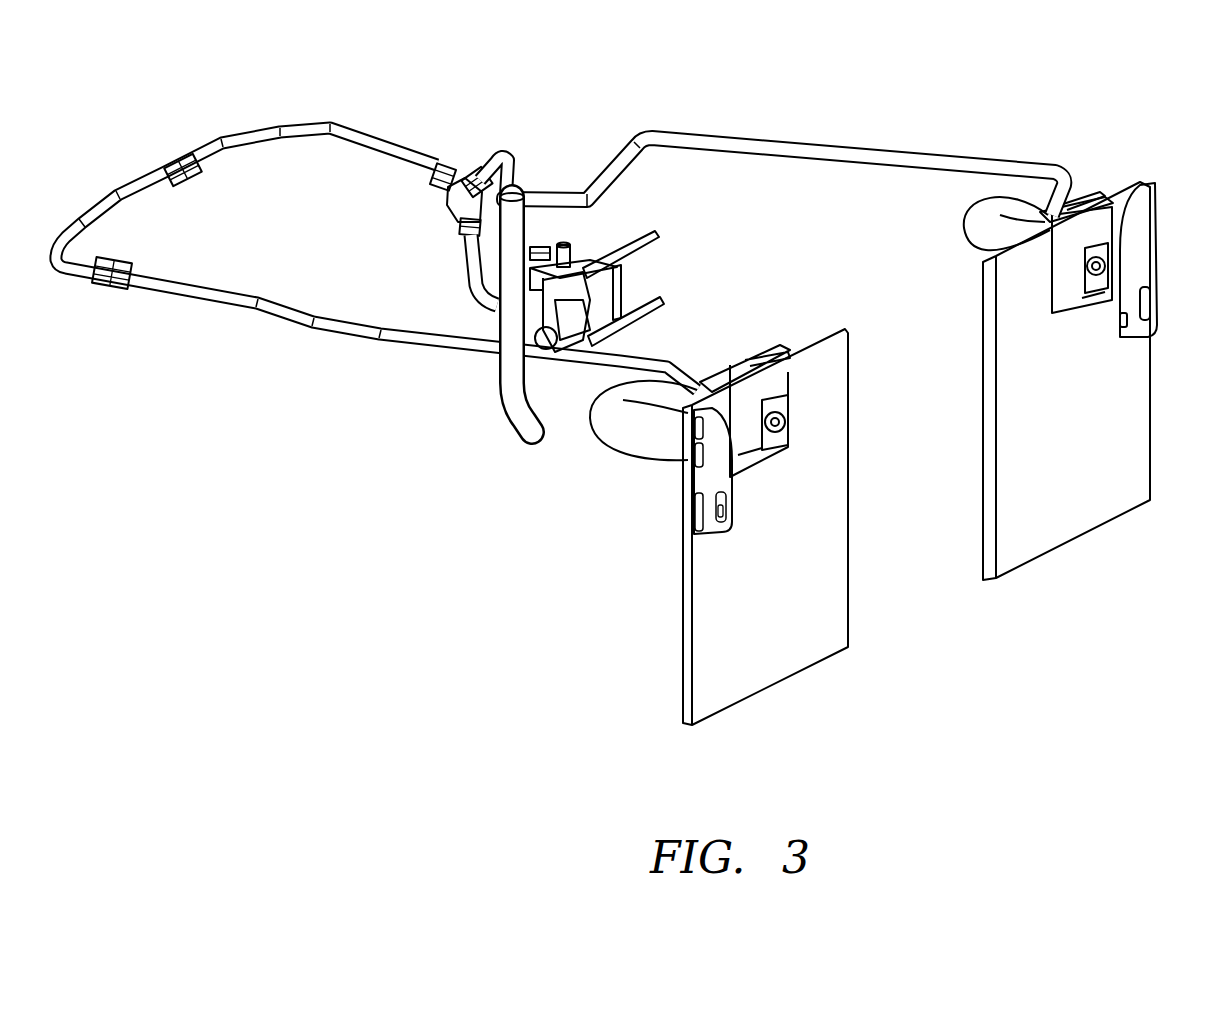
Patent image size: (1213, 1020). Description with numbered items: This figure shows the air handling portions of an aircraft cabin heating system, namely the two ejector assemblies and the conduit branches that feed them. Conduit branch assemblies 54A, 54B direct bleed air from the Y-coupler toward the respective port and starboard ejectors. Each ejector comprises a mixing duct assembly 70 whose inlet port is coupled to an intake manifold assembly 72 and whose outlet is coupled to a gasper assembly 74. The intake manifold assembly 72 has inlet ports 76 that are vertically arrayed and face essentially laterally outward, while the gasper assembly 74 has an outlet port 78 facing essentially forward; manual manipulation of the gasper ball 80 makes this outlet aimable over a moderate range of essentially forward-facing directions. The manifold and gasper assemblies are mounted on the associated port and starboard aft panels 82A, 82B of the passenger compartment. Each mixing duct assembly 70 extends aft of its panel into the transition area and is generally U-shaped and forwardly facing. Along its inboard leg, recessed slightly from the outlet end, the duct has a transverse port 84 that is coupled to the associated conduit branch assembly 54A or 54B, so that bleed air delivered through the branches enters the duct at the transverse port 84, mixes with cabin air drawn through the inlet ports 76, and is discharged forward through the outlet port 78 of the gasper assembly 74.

The conduit branch assembly 54A is at (845, 148).
The conduit branch assembly 54B is at (440, 354).
The mixing duct assembly 70 is at (642, 450).
The intake manifold assembly 72 is at (730, 518).
The gasper assembly 74 is at (770, 456).
The inlet ports 76 is at (693, 533).
The outlet port 78 is at (787, 426).
The gasper ball 80 is at (738, 453).
The port aft panel 82A is at (788, 657).
The starboard aft panel 82B is at (1094, 493).
The transverse port 84 is at (698, 381).